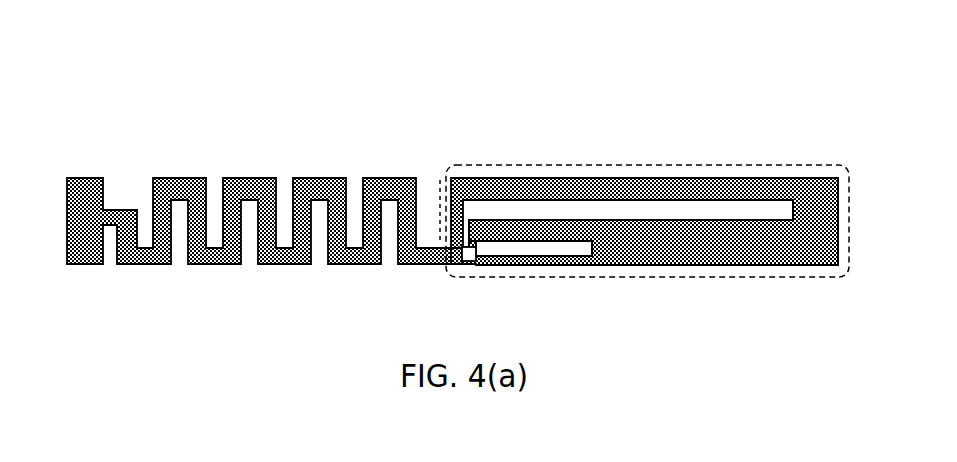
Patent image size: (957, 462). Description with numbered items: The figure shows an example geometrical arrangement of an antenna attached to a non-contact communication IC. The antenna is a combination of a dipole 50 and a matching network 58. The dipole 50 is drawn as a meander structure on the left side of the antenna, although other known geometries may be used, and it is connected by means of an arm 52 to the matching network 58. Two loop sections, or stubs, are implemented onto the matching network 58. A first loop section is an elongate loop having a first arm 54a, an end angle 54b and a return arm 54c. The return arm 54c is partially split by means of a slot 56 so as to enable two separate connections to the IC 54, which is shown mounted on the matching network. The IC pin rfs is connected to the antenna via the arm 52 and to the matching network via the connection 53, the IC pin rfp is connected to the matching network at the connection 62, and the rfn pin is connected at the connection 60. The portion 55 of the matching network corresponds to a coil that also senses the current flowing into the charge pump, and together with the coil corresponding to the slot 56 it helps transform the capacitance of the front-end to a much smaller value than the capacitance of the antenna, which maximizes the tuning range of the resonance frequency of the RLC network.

The dipole 50 is at (220, 265).
The arm 52 is at (433, 266).
The connection to matching network 53 is at (443, 185).
The IC 54 is at (467, 263).
The first arm 54a is at (547, 190).
The end angle 54b is at (814, 190).
The return arm 54c is at (788, 266).
The matching network coil portion 55 is at (613, 212).
The slot 56 is at (562, 248).
The matching network 58 is at (832, 166).
The rfn connection 60 is at (475, 261).
The rfp connection 62 is at (482, 252).